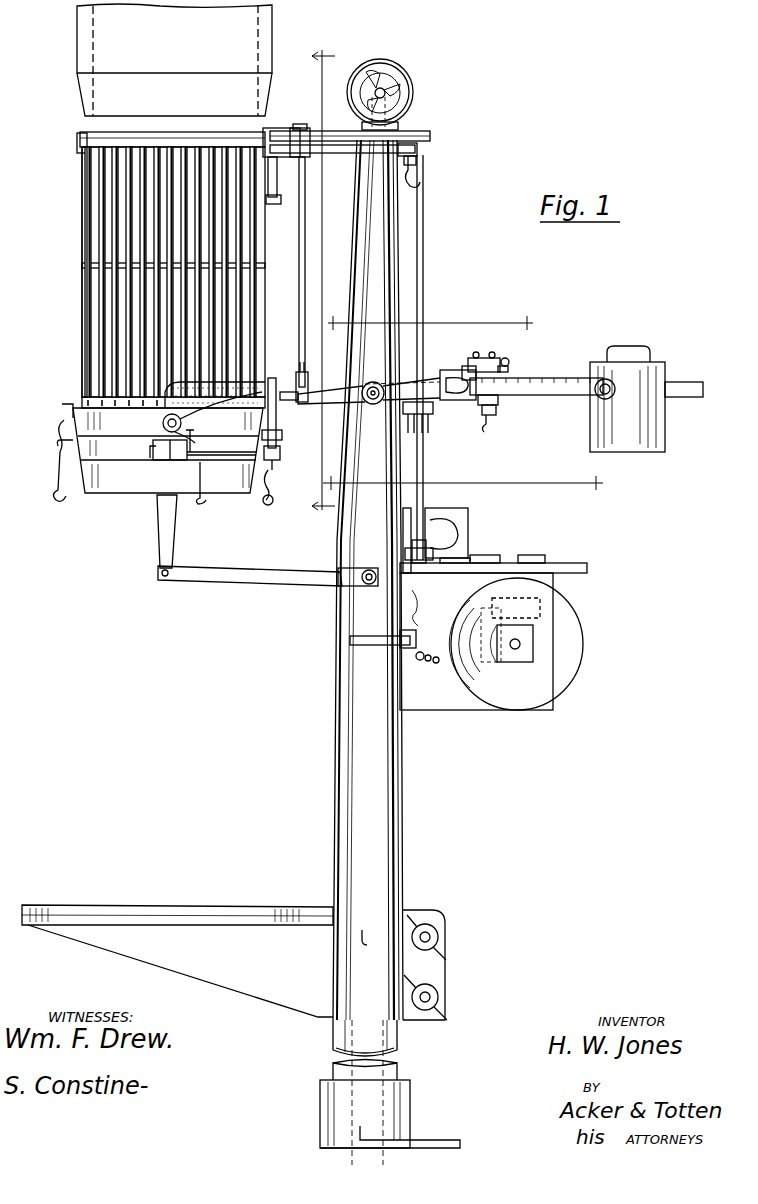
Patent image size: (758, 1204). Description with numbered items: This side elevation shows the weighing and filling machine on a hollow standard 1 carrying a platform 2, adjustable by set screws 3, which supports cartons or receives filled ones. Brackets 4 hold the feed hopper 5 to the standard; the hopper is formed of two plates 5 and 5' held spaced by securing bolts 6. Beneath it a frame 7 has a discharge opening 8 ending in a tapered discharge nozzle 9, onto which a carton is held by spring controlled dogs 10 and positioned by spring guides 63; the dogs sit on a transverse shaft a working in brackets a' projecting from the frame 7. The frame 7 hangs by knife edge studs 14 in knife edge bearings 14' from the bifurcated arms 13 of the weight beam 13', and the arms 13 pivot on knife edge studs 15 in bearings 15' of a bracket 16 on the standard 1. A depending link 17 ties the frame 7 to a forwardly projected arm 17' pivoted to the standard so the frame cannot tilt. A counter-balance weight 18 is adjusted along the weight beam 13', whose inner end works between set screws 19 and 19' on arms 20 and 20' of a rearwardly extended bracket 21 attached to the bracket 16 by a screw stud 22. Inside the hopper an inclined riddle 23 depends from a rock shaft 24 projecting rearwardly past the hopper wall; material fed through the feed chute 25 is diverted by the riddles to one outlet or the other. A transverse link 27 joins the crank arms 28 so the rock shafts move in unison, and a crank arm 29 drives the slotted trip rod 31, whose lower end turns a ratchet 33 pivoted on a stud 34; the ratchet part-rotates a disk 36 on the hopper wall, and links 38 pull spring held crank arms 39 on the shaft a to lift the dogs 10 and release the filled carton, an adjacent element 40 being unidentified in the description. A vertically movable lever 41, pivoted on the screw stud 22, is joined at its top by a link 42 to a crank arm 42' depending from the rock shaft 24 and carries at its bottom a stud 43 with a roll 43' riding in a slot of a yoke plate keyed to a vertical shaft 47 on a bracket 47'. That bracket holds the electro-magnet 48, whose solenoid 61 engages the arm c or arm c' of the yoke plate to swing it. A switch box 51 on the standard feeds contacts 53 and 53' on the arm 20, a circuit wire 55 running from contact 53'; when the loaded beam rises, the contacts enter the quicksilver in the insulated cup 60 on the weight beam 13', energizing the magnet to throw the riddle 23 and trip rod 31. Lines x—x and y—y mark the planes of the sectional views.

The standard 1 is at (372, 245).
The platform 2 is at (218, 910).
The set screws 3 is at (444, 950).
The brackets 4 is at (346, 134).
The feed hopper 5 is at (185, 276).
The plate 5' is at (66, 272).
The securing bolts 6 is at (158, 112).
The frame 7 is at (80, 438).
The discharge opening 8 is at (72, 410).
The discharge nozzle 9 is at (135, 490).
The spring controlled dogs 10 is at (160, 460).
The bifurcated arms 13 is at (382, 367).
The weight beam 13' is at (536, 371).
The knife edge studs 14 is at (156, 446).
The knife edge bearings 14' is at (189, 412).
The knife edge studs 15 is at (341, 410).
The knife edge bearings 15' is at (419, 354).
The bracket 16 is at (448, 370).
The depending link 17 is at (183, 531).
The forwardly projected arm 17' is at (268, 583).
The counter-balance weight 18 is at (665, 436).
The set screw 19 is at (525, 352).
The set screw 19' is at (511, 416).
The arm 20 is at (526, 372).
The arm 20' is at (495, 429).
The rearwardly extended bracket 21 is at (466, 366).
The screw stud 22 is at (428, 400).
The riddle 23 is at (104, 214).
The rock shaft 24 is at (77, 142).
The feed chute 25 is at (246, 36).
The transversely disposed link 27 is at (272, 204).
The crank arm 28 is at (274, 196).
The crank arm 29 is at (302, 128).
The trip rod 31 is at (299, 329).
The ratchet 33 is at (298, 374).
The stud 34 is at (296, 402).
The rotatable disk 36 is at (280, 454).
The links 38 is at (280, 432).
The spring held crank arms 39 is at (274, 470).
The latch eye 40 is at (270, 502).
The vertically disposed movable lever 41 is at (424, 286).
The link 42 is at (433, 180).
The crank arm 42' is at (432, 143).
The projecting stud 43 is at (476, 607).
The roll 43' is at (446, 520).
The vertical shaft 47 is at (471, 545).
The bracket 47' is at (470, 547).
The electro-magnet 48 is at (556, 690).
The switch box 51 is at (412, 90).
The contact 53 is at (502, 329).
The contact 53' is at (507, 344).
The circuit wire 55 is at (403, 631).
The insulated cup 60 is at (498, 401).
The solenoid 61 is at (522, 664).
The spring guides 63 is at (66, 496).
The transverse shaft a is at (323, 271).
The brackets a' is at (221, 465).
The arm of yoke plate c is at (501, 560).
The arm of yoke plate c' is at (526, 547).
The section line x— x is at (430, 315).
The section line y— y is at (463, 475).